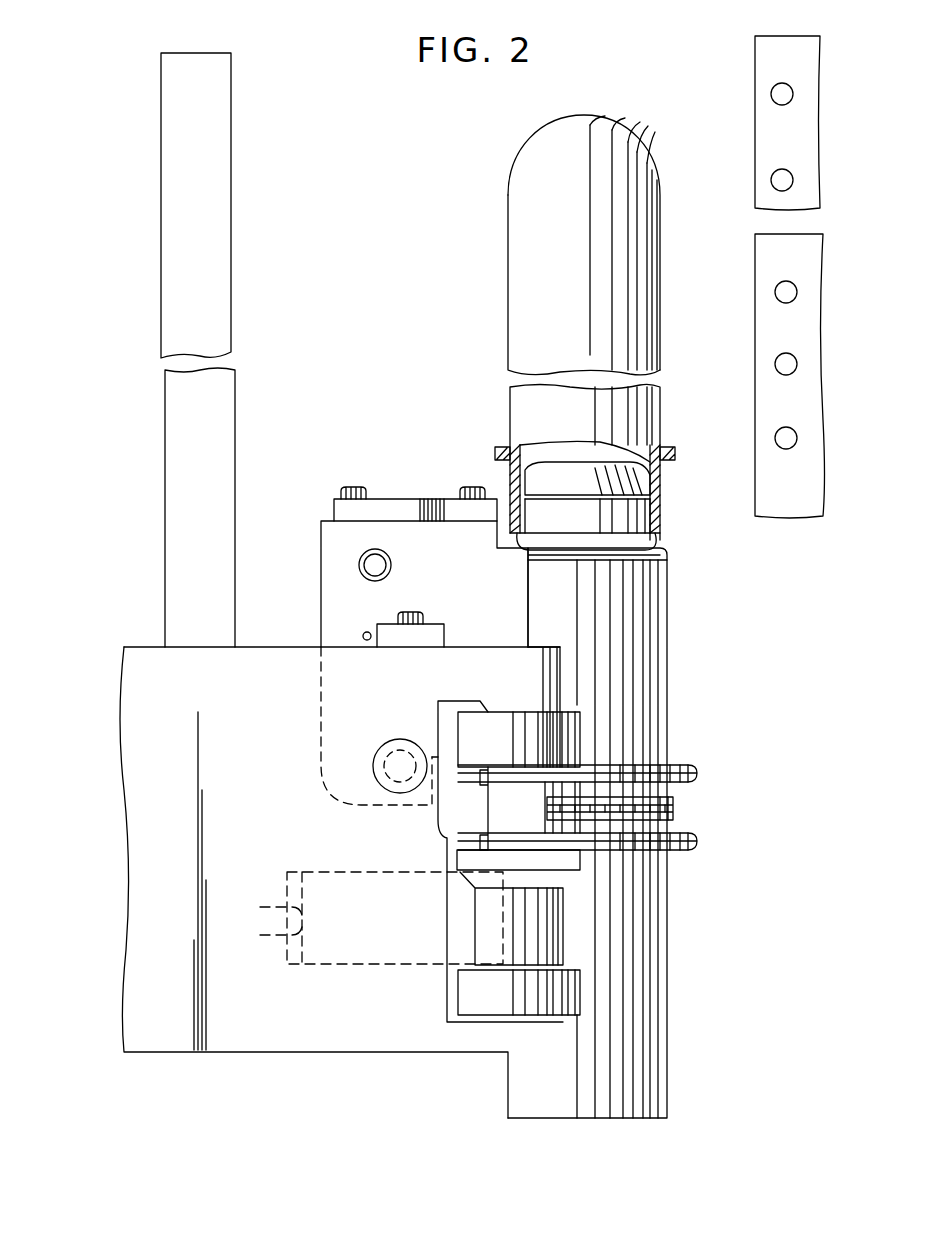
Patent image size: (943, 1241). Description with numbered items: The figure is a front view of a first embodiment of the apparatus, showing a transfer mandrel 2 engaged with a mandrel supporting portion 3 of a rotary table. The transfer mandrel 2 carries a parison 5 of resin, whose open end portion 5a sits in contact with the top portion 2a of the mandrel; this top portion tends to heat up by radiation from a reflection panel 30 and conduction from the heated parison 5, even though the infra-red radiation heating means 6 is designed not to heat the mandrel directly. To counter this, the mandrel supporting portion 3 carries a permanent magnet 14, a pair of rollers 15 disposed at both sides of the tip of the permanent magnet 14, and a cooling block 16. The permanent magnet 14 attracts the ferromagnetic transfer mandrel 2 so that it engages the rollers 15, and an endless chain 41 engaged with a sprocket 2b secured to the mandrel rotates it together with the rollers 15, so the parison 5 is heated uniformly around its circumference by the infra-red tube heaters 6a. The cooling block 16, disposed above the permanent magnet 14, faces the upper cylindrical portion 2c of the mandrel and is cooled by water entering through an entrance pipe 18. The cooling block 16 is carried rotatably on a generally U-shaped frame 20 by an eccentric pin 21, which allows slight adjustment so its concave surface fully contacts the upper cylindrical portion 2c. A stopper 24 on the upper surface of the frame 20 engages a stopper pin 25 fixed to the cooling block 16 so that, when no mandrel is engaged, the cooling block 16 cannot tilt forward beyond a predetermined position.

The transfer mandrel 2 is at (670, 638).
The top portion 2a is at (649, 491).
The sprocket 2b is at (618, 812).
The upper cylindrical portion 2c is at (667, 560).
The mandrel supporting portion 3 is at (333, 1060).
The parison 5 is at (661, 422).
The open end portion 5a is at (656, 513).
The infra-red radiation heating means 6 is at (755, 283).
The infra-red tube heaters 6a is at (776, 360).
The permanent magnet 14 is at (403, 948).
The rollers 15 is at (485, 928).
The cooling block 16 is at (320, 582).
The entrance pipe 18 is at (392, 560).
The frame 20 is at (512, 647).
The eccentric pin 21 is at (392, 754).
The stopper 24 is at (435, 628).
The stopper pin 25 is at (363, 633).
The reflection panel 30 is at (232, 471).
The endless chain 41 is at (674, 806).